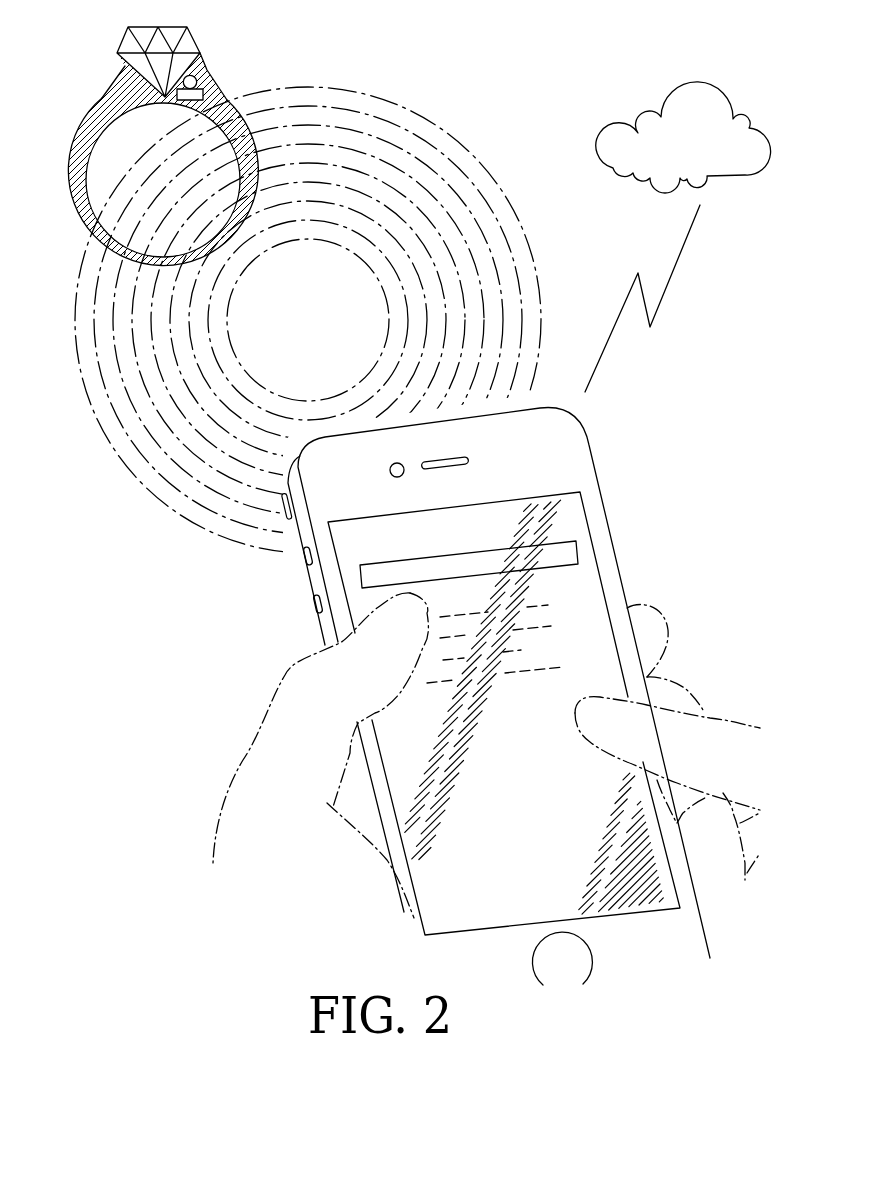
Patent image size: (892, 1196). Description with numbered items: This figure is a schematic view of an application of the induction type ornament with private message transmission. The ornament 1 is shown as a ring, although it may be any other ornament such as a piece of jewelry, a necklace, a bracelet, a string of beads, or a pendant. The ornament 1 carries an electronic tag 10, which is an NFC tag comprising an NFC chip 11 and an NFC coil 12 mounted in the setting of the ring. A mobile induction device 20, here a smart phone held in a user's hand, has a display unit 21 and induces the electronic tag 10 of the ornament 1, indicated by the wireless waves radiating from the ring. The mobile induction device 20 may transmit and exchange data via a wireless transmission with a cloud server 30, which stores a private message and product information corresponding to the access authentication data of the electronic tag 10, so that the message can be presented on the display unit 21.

The ornament 1 is at (88, 90).
The electronic tag 10 is at (212, 84).
The NFC chip 11 is at (204, 95).
The NFC coil 12 is at (195, 77).
The mobile induction device 20 is at (641, 497).
The display unit 21 is at (585, 590).
The cloud server 30 is at (721, 202).